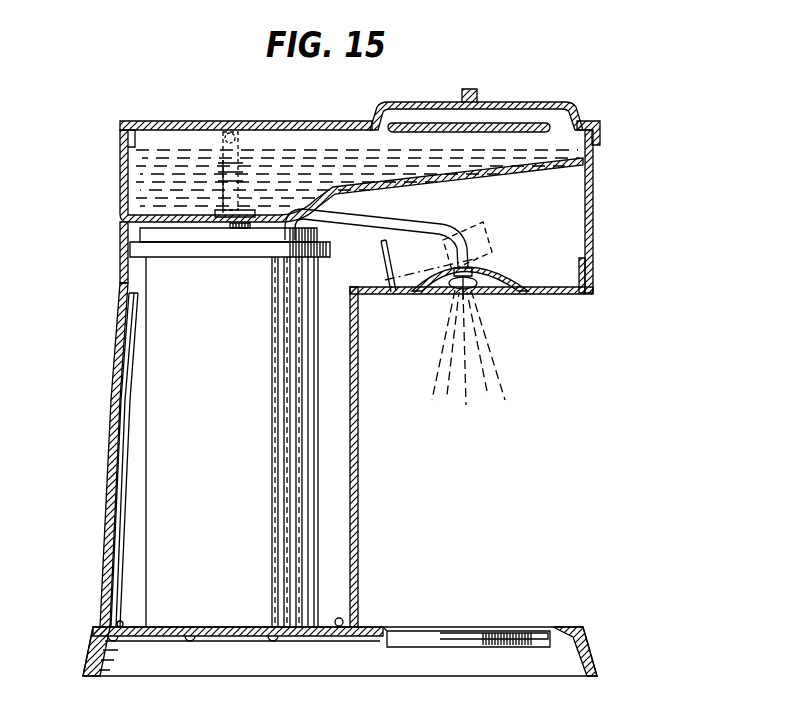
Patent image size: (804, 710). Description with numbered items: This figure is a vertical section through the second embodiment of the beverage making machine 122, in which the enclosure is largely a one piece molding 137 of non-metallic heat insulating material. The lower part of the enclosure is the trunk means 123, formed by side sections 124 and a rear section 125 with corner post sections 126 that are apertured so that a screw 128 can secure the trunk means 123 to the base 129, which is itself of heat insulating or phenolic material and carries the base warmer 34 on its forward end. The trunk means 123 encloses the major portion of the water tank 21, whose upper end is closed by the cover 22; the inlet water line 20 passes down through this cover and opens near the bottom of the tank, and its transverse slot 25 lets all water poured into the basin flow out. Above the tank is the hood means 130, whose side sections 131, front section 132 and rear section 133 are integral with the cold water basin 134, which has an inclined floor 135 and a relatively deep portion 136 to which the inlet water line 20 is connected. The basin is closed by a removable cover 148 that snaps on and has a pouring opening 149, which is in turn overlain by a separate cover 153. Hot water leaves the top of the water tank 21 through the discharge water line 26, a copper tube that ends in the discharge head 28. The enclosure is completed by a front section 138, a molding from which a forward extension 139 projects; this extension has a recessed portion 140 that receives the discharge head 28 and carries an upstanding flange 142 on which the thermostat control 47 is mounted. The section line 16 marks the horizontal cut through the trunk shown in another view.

The beverage making machine 122 is at (558, 71).
The hood means 130 is at (630, 119).
The cold water basin 134 is at (206, 140).
The removable cover 148 is at (277, 125).
The cover 153 is at (418, 103).
The pouring opening 149 is at (502, 123).
The rear section 133 is at (123, 188).
The relatively deep portion 136 is at (303, 190).
The transverse slot 25 is at (218, 208).
The inlet water line 20 is at (237, 220).
The inclined floor 135 is at (438, 177).
The side sections 131 is at (546, 206).
The front section 132 is at (592, 205).
The one piece molding 137 is at (103, 228).
The discharge water line 26 is at (377, 223).
The cover 22 is at (329, 234).
The thermostat control 47 is at (487, 235).
The discharge head 28 is at (480, 277).
The upstanding flange 142 is at (388, 262).
The forward extension 139 is at (382, 294).
The recessed portion 140 is at (513, 291).
The rear section 125 is at (117, 332).
The section line 16— 16 is at (75, 463).
The trunk means 123 is at (88, 487).
The water tank 21 is at (153, 518).
The side sections 124 is at (347, 485).
The front section 138 is at (360, 518).
The corner post section 126 is at (118, 588).
The screw 128 is at (113, 633).
The base warmer 34 is at (487, 636).
The base 129 is at (588, 642).